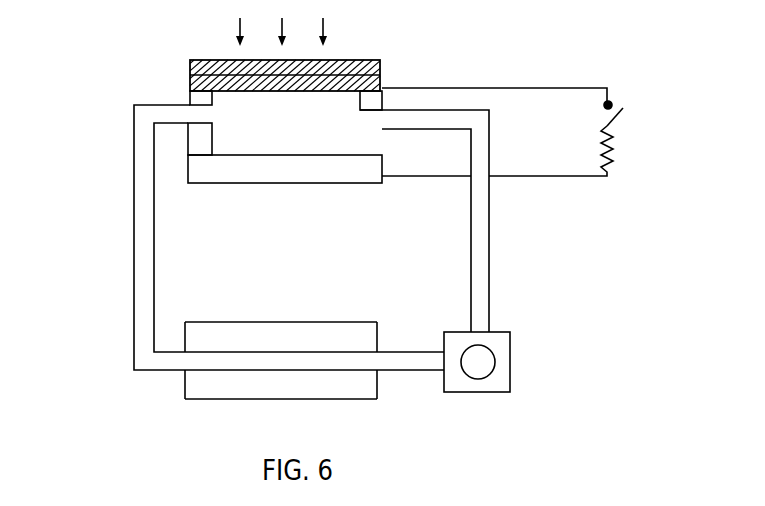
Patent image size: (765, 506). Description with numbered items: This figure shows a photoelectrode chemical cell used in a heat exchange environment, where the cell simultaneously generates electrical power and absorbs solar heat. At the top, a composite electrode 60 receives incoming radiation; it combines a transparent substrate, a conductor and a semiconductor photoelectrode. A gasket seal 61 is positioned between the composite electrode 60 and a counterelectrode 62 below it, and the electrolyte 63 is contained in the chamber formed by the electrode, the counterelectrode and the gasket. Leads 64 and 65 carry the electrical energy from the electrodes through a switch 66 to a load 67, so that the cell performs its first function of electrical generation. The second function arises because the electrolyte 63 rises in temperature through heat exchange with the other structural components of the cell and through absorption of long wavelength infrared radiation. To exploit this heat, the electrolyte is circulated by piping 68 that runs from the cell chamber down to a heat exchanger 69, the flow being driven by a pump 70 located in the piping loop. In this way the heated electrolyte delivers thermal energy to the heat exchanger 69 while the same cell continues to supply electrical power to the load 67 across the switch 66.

The composite electrode 60 is at (190, 72).
The gasket seal 61 is at (190, 98).
The counterelectrode 62 is at (238, 172).
The electrolyte 63 is at (328, 118).
The lead 64 is at (518, 88).
The lead 65 is at (413, 176).
The switch 66 is at (623, 113).
The load 67 is at (610, 160).
The piping 68 is at (132, 312).
The heat exchanger 69 is at (237, 399).
The pump 70 is at (477, 392).